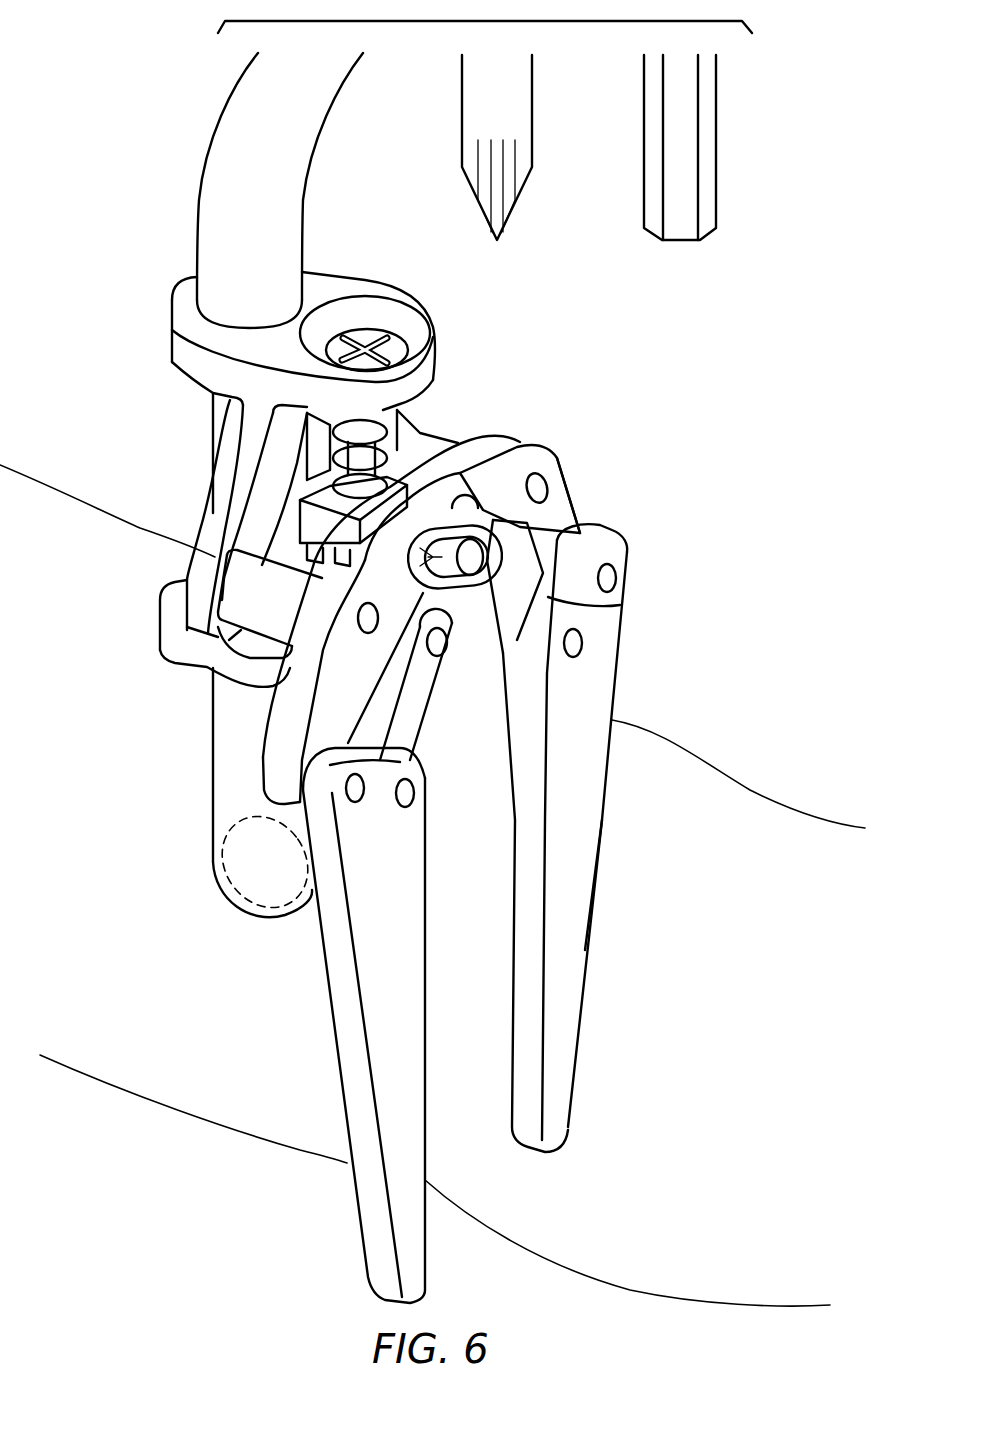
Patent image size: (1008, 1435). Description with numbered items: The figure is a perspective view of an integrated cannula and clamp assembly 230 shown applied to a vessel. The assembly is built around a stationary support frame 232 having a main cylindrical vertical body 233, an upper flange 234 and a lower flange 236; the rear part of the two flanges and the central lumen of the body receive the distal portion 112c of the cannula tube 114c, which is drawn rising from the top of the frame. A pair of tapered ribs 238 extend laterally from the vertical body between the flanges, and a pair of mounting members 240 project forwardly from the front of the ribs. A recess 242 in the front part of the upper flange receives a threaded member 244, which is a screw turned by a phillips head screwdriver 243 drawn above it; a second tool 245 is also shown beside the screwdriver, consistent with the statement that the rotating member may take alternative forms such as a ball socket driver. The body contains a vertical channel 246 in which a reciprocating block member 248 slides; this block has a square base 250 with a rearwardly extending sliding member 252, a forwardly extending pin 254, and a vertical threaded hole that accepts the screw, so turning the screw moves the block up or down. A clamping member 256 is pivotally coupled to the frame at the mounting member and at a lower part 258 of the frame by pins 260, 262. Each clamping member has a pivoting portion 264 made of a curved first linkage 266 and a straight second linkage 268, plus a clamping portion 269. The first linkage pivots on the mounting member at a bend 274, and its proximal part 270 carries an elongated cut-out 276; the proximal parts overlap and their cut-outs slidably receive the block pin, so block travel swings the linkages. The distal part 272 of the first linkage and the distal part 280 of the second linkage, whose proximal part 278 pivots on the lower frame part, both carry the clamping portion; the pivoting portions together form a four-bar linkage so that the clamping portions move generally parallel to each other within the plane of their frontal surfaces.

The cannula tube 114c is at (205, 192).
The distal portion of the cannula tube 112c is at (212, 803).
The support frame 232 is at (176, 343).
The recess 242 is at (398, 325).
The upper flange 234 is at (432, 364).
The threaded member 244 is at (388, 424).
The integrated cannula and clamp assembly 230 is at (562, 394).
The main cylindrical vertical body 233 is at (242, 455).
The vertical channel 246 is at (307, 428).
The sliding member 252 is at (307, 477).
The tapered ribs 238 is at (310, 500).
The square base 250 is at (300, 497).
The reciprocating block member 248 is at (300, 513).
The mounting members 240 is at (442, 435).
The proximal part of the first linkage 270 is at (471, 455).
The first linkage 266 is at (562, 467).
The pin 254 is at (463, 553).
The pivoting portion 264 is at (573, 502).
The distal part of the first linkage 272 is at (592, 528).
The clamping member 256 is at (620, 658).
The second linkage 268 is at (548, 600).
The clamping portion 269 is at (607, 773).
The elongated cut-outs 276 is at (440, 567).
The bend 274 is at (323, 600).
The pin 260 is at (360, 630).
The pin 262 is at (425, 710).
The proximal part of the second linkage 278 is at (450, 653).
The distal part of the second linkage 280 is at (418, 748).
The lower flange 236 is at (160, 633).
The lower part of the stationary frame 258 is at (238, 630).
The phillips head screwdriver 243 is at (518, 100).
The hex wrench 245 is at (692, 120).